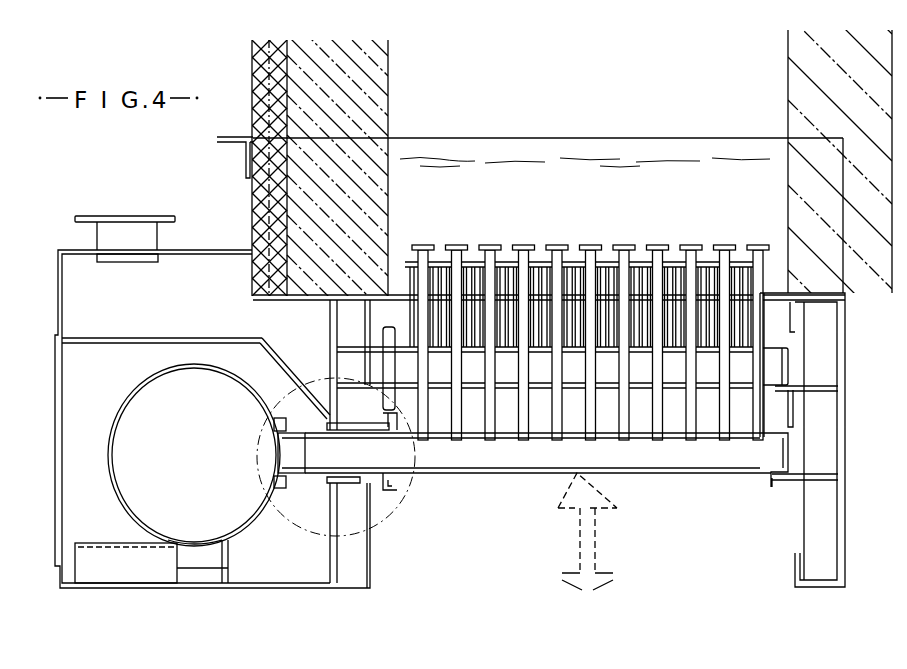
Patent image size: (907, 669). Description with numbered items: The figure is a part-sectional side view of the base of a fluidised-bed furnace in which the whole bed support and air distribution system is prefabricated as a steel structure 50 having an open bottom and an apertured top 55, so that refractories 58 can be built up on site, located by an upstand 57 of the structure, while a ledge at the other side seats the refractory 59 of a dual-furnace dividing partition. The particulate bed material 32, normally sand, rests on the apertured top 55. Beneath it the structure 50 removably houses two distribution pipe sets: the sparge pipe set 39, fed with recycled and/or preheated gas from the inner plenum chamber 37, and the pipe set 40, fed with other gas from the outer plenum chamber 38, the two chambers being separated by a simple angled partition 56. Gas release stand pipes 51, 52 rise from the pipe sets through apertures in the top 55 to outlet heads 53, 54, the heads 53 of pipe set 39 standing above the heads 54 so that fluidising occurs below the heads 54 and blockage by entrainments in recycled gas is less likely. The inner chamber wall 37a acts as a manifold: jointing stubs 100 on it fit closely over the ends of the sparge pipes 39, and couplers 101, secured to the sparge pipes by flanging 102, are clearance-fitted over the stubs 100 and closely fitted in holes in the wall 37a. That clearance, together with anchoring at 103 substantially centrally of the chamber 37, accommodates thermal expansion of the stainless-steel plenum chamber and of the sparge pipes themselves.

The particulate bed material 32 is at (523, 213).
The plenum chamber 37 is at (181, 420).
The inner chamber wall 37a is at (352, 328).
The plenum chamber 38 is at (251, 323).
The distribution pipe set 39 is at (547, 463).
The distribution pipe set 40 is at (513, 367).
The steel structure 50 is at (850, 530).
The gas release stand pipes 51 is at (622, 402).
The gas release stand pipes 52 is at (742, 337).
The outlet heads 53 is at (658, 258).
The outlet heads 54 is at (572, 258).
The apertured top 55 is at (766, 290).
The angled partition 56 is at (285, 360).
The upstand 57 is at (247, 170).
The refractories 58 is at (383, 106).
The refractory 59 is at (812, 75).
The jointing stubs 100 is at (305, 413).
The couplers 101 is at (327, 482).
The flanging 102 is at (398, 490).
The anchoring 103 is at (212, 578).